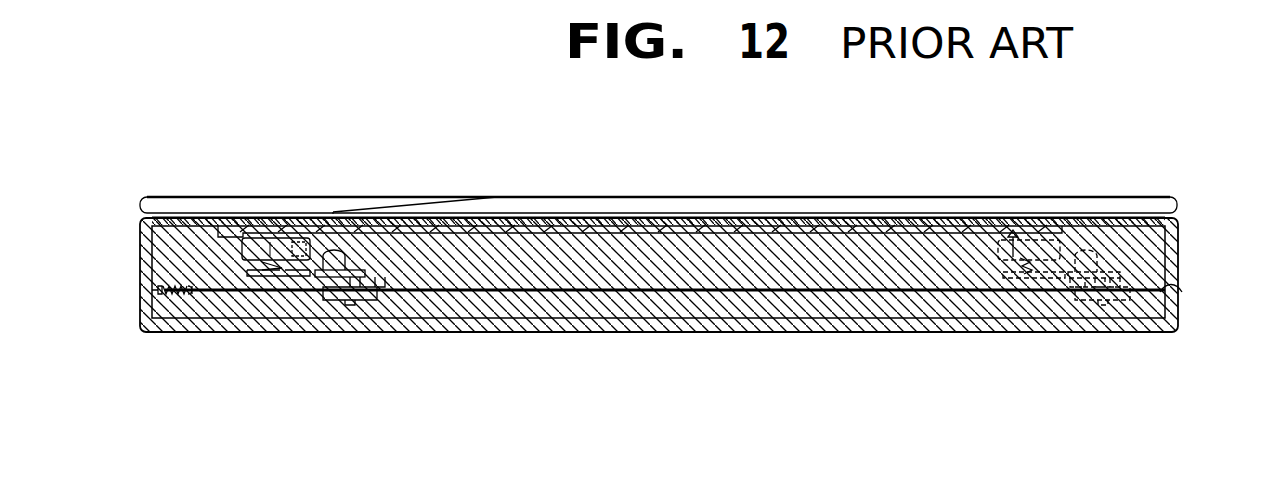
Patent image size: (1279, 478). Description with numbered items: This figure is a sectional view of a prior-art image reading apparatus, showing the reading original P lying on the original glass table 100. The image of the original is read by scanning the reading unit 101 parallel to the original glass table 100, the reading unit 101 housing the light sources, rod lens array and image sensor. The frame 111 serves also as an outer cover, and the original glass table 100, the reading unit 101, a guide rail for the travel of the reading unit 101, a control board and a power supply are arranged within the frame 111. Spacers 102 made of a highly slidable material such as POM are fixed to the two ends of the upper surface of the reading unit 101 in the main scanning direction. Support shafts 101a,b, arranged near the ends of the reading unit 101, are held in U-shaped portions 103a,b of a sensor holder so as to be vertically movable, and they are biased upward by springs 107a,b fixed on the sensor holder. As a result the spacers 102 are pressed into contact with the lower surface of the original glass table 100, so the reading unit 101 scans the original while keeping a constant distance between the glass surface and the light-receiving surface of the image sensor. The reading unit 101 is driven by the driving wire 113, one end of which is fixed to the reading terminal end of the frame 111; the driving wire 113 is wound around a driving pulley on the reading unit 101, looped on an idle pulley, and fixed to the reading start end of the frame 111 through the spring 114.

The original glass table 100 is at (768, 217).
The reading original P is at (647, 220).
The reading unit 101 is at (231, 254).
The spacers 102 is at (297, 270).
The support shafts 101a,b is at (333, 210).
The U-shaped portions 103a,b is at (505, 197).
The springs 107a,b is at (272, 263).
The frame 111 is at (141, 318).
The driving wire 113 is at (963, 290).
The spring 114 is at (160, 290).